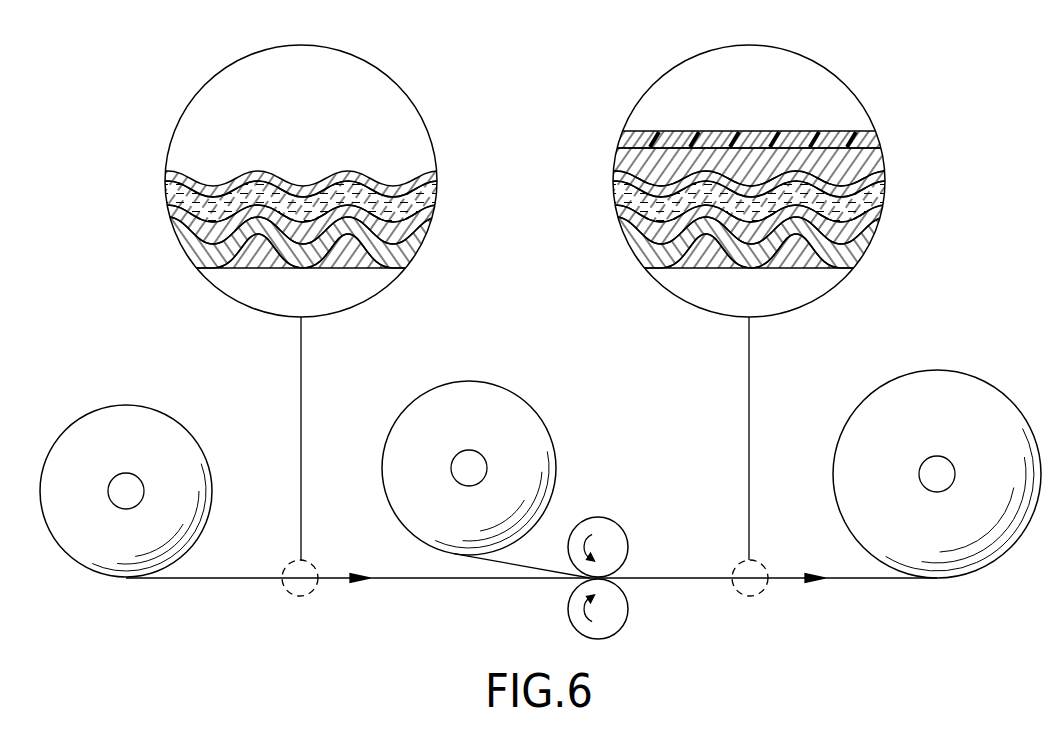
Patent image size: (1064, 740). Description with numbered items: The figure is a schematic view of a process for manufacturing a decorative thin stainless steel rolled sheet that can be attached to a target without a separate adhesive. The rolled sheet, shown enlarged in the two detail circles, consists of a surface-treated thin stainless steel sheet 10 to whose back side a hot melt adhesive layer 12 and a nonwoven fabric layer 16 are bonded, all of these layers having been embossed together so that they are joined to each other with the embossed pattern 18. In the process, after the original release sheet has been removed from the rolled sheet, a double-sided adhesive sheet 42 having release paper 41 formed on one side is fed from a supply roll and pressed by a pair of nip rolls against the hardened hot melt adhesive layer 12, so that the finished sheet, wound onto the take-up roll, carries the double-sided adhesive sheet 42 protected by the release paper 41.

The thin stainless steel sheet 10 is at (227, 268).
The hot melt adhesive layer 12 is at (200, 190).
The nonwoven fabric layer 16 is at (195, 208).
The embossed pattern 18 is at (283, 261).
The release paper 41 is at (793, 130).
The double-sided adhesive sheet 42 is at (833, 167).